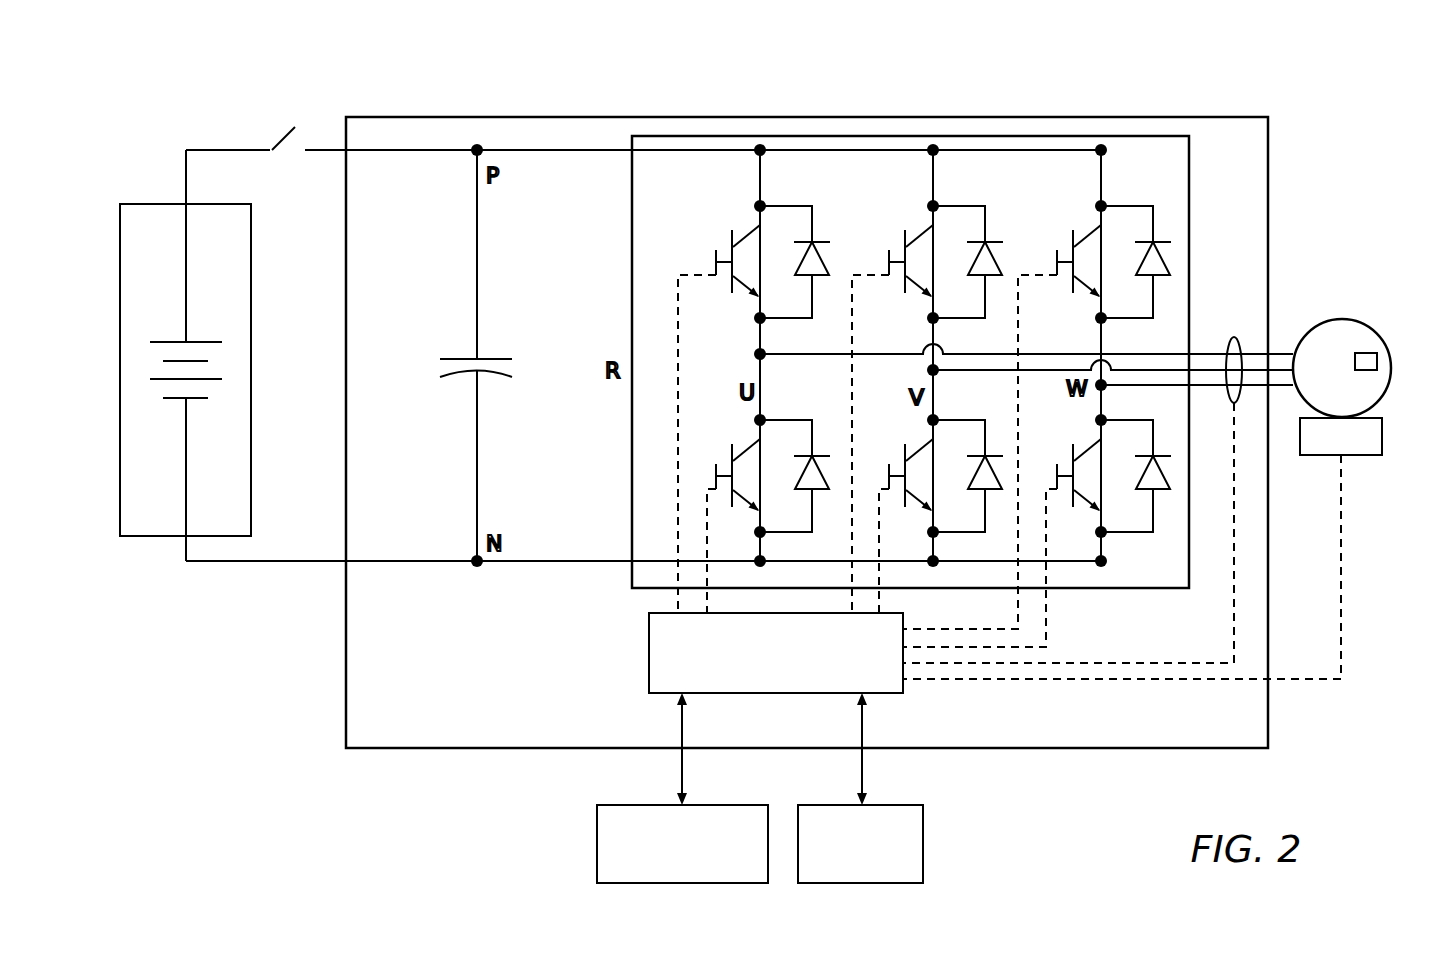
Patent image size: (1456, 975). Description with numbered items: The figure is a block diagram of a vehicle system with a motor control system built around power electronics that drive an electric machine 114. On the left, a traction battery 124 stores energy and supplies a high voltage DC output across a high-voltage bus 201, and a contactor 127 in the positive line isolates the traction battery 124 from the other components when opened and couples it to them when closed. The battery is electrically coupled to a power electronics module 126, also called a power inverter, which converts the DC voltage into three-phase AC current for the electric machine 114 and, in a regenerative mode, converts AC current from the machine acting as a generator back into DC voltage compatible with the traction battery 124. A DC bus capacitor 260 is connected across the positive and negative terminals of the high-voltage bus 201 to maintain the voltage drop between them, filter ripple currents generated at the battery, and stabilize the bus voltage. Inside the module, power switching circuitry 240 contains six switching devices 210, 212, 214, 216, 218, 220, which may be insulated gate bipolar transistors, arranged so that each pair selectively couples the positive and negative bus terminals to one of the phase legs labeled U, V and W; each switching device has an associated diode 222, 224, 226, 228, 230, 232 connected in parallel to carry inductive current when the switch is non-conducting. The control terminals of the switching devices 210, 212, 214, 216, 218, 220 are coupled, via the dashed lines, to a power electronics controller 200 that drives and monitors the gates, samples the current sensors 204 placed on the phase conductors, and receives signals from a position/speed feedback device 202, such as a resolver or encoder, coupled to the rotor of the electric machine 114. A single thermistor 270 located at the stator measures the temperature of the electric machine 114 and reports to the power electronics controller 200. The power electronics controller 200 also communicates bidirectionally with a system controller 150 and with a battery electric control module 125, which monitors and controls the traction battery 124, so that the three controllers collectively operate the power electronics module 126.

The electric machine 114 is at (1340, 320).
The traction battery 124 is at (140, 203).
The battery electric control module (BECM) 125 is at (923, 825).
The power electronics module 126 is at (724, 117).
The contactor 127 is at (287, 155).
The system controller 150 is at (595, 823).
The power electronics controller 200 is at (649, 635).
The high-voltage bus 201 is at (242, 150).
The position/speed feedback device 202 is at (1367, 455).
The current sensor 204 is at (1235, 337).
The switching device 210 is at (730, 237).
The switching device 212 is at (732, 457).
The switching device 214 is at (905, 247).
The switching device 216 is at (905, 457).
The switching device 218 is at (1072, 247).
The switching device 220 is at (1072, 462).
The diode 222 is at (818, 242).
The diode 224 is at (822, 455).
The diode 226 is at (992, 242).
The diode 228 is at (993, 455).
The diode 230 is at (1160, 242).
The diode 232 is at (1163, 455).
The power switching circuitry 240 is at (1142, 136).
The DC bus capacitor 260 is at (453, 359).
The thermistor 270 is at (1377, 358).